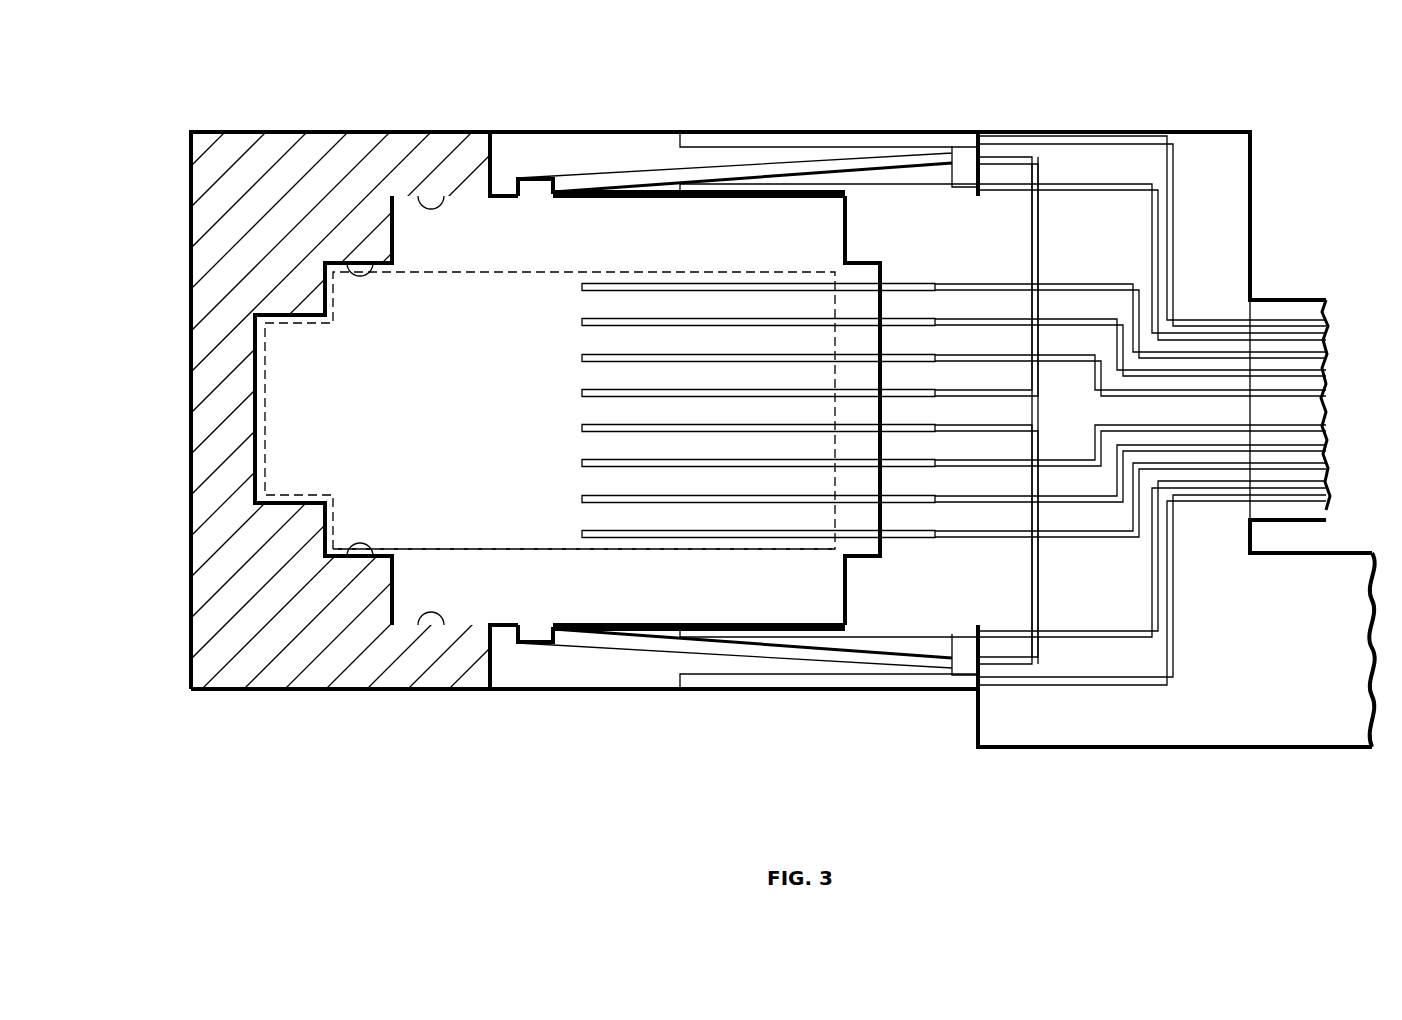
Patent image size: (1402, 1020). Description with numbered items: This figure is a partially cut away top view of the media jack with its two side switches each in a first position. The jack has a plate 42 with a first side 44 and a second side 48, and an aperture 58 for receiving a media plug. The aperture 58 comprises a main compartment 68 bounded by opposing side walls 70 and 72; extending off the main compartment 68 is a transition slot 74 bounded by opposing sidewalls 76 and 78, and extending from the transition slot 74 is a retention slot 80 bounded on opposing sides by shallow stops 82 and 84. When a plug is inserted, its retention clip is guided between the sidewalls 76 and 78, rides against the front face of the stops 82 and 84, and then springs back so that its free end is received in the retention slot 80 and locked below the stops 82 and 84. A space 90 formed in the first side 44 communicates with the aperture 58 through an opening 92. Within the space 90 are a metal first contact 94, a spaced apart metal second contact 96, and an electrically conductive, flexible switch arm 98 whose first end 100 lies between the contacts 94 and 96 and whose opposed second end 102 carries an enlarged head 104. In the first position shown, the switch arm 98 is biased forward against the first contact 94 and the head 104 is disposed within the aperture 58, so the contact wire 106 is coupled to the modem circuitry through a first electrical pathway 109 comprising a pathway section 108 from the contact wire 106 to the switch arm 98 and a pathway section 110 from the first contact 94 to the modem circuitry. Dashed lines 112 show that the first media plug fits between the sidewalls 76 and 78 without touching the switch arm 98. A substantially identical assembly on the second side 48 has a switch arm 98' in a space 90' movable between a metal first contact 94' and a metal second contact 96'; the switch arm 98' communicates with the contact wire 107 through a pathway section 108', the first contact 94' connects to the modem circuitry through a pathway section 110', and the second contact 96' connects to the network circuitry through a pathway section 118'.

The plate 42 is at (243, 668).
The first side 44 is at (807, 693).
The second side 48 is at (795, 132).
The aperture 58 is at (446, 429).
The main compartment 68 is at (510, 328).
The side wall 70 is at (418, 197).
The side wall 72 is at (470, 613).
The transition slot 74 is at (365, 397).
The sidewall 76 is at (343, 262).
The sidewall 78 is at (340, 553).
The retention slot 80 is at (283, 468).
The shallow stop 82 is at (290, 302).
The shallow stop 84 is at (282, 510).
The space 90 is at (681, 704).
The space 90' is at (681, 118).
The opening 92 is at (627, 625).
The first contact 94 is at (932, 631).
The first contact 94' is at (829, 212).
The second contact 96 is at (829, 713).
The second contact 96' is at (748, 132).
The switch arm 98 is at (752, 695).
The switch arm 98' is at (752, 124).
The first end 100 is at (935, 660).
The second end 102 is at (557, 640).
The enlarged head 104 is at (530, 603).
The contact wire 106 is at (583, 431).
The contact wire 107 is at (583, 391).
The pathway section 108 is at (1152, 653).
The pathway section 108' is at (1152, 198).
The first electrical pathway 109 is at (1085, 803).
The pathway section 110 is at (1152, 645).
The pathway section 110' is at (1152, 210).
The dashed lines 112 is at (443, 550).
The pathway section 118' is at (1041, 354).